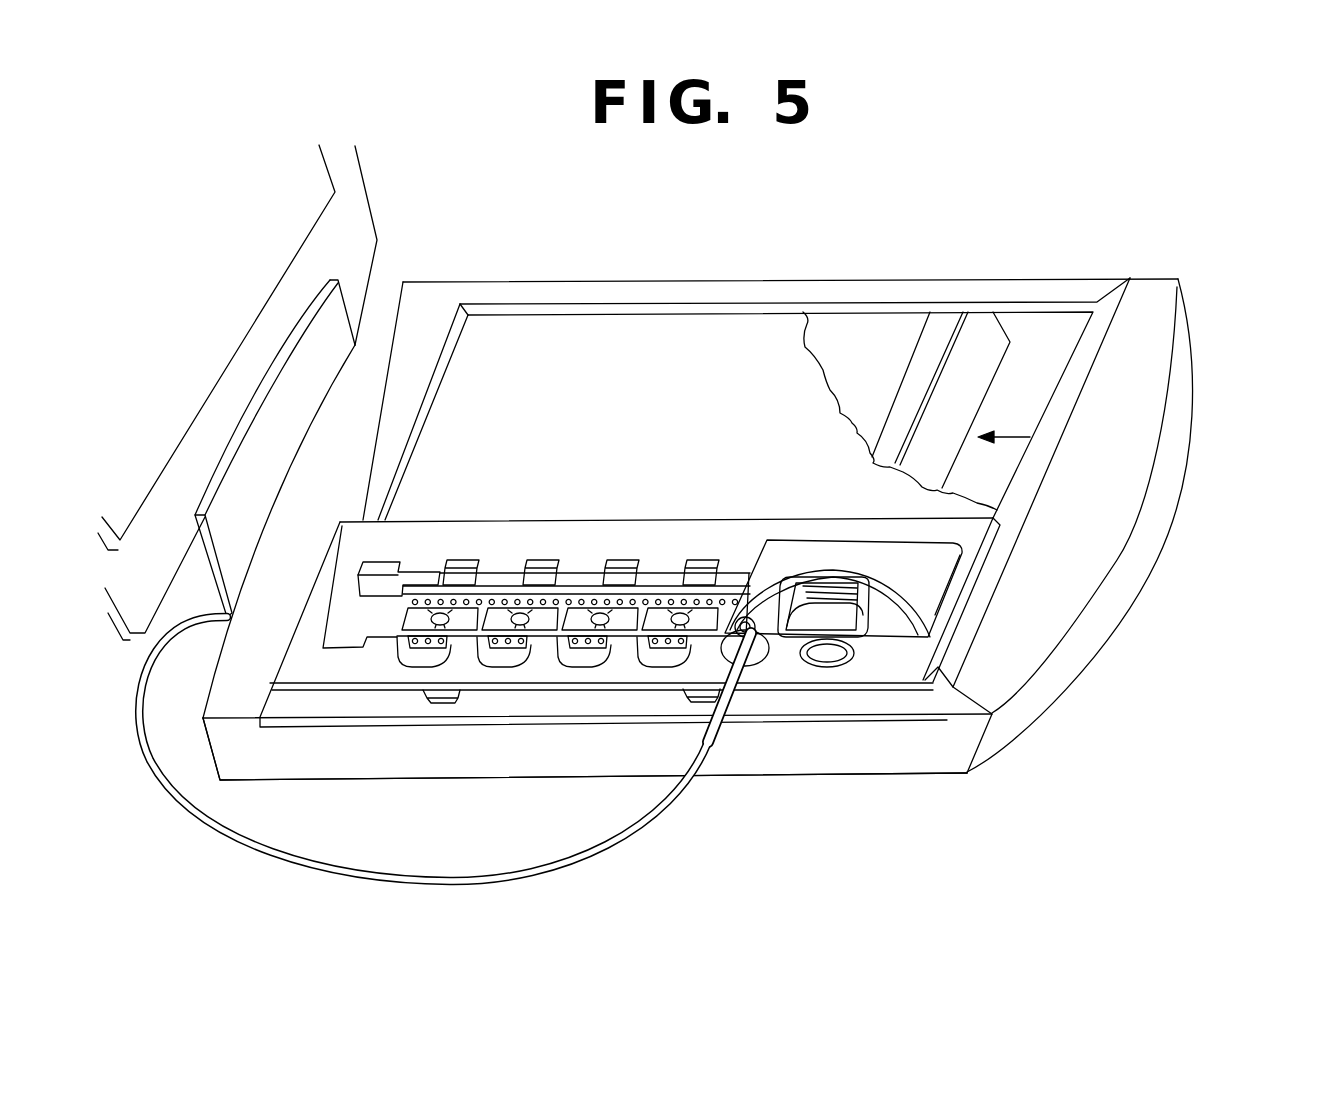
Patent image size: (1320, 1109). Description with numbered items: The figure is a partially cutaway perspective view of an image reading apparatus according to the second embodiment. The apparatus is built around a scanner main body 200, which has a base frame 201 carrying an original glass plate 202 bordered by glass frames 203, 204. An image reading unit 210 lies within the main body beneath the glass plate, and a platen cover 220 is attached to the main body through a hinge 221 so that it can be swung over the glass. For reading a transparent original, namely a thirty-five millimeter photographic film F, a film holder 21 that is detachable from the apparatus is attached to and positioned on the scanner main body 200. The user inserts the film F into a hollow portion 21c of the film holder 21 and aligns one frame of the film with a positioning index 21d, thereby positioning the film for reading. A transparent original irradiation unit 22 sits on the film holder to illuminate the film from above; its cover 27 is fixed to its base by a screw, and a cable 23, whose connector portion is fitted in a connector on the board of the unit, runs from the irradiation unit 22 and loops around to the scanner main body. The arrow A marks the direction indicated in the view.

The scanner main body 200 is at (1222, 330).
The base frame 201 is at (1153, 300).
The original glass plate 202 is at (616, 330).
The glass frame 203 is at (940, 702).
The glass frame 204 is at (880, 292).
The image reading unit 210 is at (977, 330).
The platen cover 220 is at (352, 225).
The hinge of the platen cover 221 is at (338, 333).
The film holder 21 is at (327, 668).
The hollow portion 21c is at (377, 607).
The positioning index 21d is at (510, 567).
The transparent original irradiation unit 22 is at (834, 541).
The cable 23 is at (541, 880).
The cover 27 is at (937, 583).
The photographic film F is at (578, 593).
The direction arrow A is at (1004, 420).